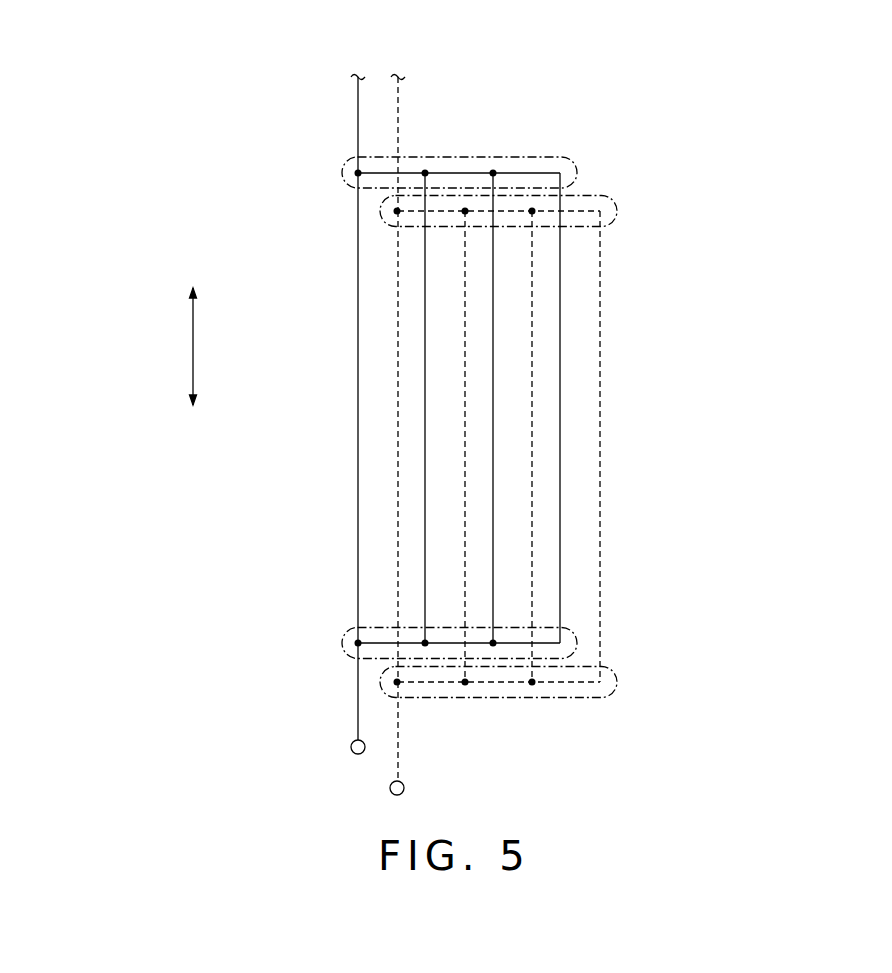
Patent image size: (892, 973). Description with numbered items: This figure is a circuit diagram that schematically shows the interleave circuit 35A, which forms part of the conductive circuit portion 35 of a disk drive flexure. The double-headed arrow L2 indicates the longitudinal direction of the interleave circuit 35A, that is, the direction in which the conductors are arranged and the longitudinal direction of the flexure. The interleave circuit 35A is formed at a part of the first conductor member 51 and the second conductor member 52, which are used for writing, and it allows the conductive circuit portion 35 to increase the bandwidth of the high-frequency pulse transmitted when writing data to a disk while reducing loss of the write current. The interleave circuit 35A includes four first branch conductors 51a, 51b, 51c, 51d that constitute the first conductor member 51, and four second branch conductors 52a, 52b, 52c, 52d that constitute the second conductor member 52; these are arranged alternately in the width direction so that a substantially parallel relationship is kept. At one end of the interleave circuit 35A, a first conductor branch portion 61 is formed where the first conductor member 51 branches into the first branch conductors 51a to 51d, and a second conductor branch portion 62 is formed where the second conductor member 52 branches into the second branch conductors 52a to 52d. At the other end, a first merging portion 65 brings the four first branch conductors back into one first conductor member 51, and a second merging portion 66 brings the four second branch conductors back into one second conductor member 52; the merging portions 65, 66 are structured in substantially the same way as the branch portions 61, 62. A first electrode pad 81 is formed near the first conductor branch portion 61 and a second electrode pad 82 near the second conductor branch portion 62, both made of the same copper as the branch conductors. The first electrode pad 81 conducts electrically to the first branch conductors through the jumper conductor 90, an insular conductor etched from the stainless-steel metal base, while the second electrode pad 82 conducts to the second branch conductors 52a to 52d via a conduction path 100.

The conductive circuit portion 35 is at (460, 84).
The interleave circuit 35A is at (665, 307).
The first conductor member 51 is at (357, 128).
The first branch conductor 51a is at (357, 435).
The first branch conductor 51b is at (425, 492).
The first branch conductor 51c is at (493, 548).
The first branch conductor 51d is at (560, 605).
The second conductor member 52 is at (400, 127).
The second branch conductor 52a is at (395, 372).
The second branch conductor 52b is at (463, 422).
The second branch conductor 52c is at (532, 480).
The second branch conductor 52d is at (600, 532).
The first conductor branch portion 61 is at (336, 642).
The second conductor branch portion 62 is at (570, 704).
The first merging portion 65 is at (336, 178).
The second merging portion 66 is at (597, 190).
The first electrode pad 81 is at (350, 748).
The second electrode pad 82 is at (404, 788).
The jumper conductor 90 is at (357, 692).
The conduction path 100 is at (400, 726).
The longitudinal direction L2 is at (192, 346).